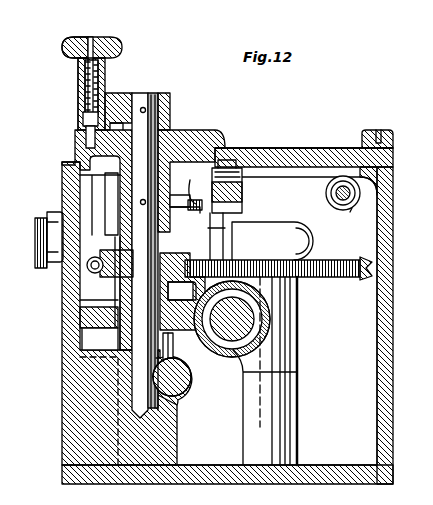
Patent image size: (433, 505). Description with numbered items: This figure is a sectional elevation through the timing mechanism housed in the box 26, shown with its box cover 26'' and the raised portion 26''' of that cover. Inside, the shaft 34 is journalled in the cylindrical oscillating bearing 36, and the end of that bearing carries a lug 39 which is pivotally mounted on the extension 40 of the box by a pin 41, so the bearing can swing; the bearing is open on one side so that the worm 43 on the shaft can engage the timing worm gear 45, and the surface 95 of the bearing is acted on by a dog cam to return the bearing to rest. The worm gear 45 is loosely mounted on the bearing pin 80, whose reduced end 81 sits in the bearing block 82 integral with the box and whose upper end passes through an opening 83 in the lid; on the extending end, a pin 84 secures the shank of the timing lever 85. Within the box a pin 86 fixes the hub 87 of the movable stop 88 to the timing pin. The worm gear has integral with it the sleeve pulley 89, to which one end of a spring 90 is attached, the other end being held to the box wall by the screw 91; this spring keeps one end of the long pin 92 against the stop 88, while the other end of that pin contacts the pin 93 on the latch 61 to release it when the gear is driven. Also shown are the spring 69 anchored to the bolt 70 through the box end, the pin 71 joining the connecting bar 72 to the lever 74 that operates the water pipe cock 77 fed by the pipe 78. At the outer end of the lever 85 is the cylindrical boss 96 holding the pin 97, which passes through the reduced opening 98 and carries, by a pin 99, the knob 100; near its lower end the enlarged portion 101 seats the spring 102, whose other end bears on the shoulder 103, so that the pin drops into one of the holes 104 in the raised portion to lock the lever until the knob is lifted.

The box 26 is at (243, 307).
The box cover 26'' is at (307, 132).
The raised portion of the box cover 26''' is at (81, 236).
The shaft 34 is at (245, 312).
The cylindrical oscillating bearing 36 is at (273, 318).
The lug 39 is at (292, 360).
The extension 40 is at (290, 392).
The pin 41 is at (282, 342).
The worm 43 is at (188, 368).
The timing worm gear 45 is at (97, 312).
The latch 61 is at (180, 378).
The spring 69 is at (352, 209).
The bolt 70 is at (326, 190).
The pin 71 is at (228, 160).
The connecting bar 72 is at (242, 190).
The lever 74 is at (218, 150).
The water pipe cock 77 is at (224, 226).
The pipe 78 is at (290, 222).
The bearing pin 80 is at (146, 94).
The reduced end 81 is at (156, 402).
The bearing block 82 is at (147, 436).
The opening 83 is at (215, 140).
The pin 84 is at (168, 108).
The timing lever 85 is at (114, 96).
The pin 86 is at (183, 188).
The hub 87 is at (186, 210).
The movable stop 88 is at (110, 192).
The sleeve pulley 89 is at (182, 282).
The spring 90 is at (336, 260).
The screw 91 is at (366, 272).
The pin 92 is at (88, 262).
The pin 93 is at (174, 342).
The surface 95 is at (200, 298).
The cylindrical boss 96 is at (78, 62).
The pin 97 is at (92, 36).
The reduced opening 98 is at (106, 62).
The pin 99 is at (84, 36).
The knob 100 is at (112, 38).
The enlarged portion 101 is at (82, 118).
The spring 102 is at (82, 100).
The shoulder 103 is at (84, 78).
The holes 104 is at (86, 136).